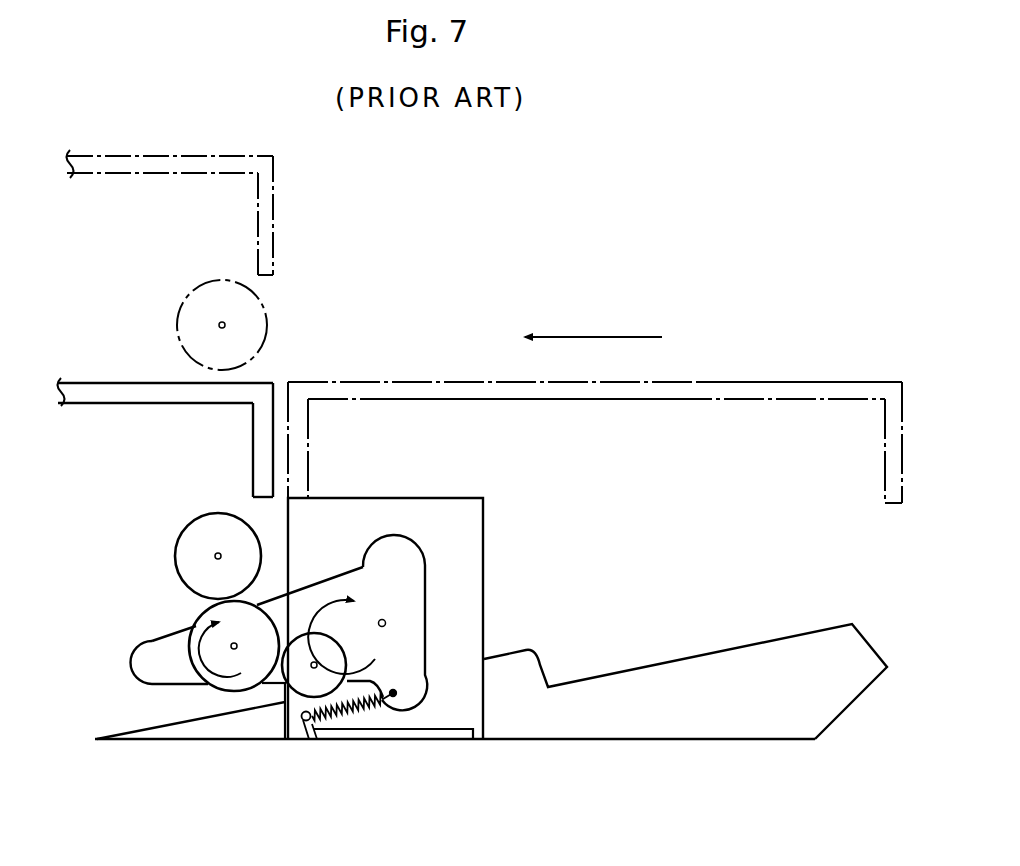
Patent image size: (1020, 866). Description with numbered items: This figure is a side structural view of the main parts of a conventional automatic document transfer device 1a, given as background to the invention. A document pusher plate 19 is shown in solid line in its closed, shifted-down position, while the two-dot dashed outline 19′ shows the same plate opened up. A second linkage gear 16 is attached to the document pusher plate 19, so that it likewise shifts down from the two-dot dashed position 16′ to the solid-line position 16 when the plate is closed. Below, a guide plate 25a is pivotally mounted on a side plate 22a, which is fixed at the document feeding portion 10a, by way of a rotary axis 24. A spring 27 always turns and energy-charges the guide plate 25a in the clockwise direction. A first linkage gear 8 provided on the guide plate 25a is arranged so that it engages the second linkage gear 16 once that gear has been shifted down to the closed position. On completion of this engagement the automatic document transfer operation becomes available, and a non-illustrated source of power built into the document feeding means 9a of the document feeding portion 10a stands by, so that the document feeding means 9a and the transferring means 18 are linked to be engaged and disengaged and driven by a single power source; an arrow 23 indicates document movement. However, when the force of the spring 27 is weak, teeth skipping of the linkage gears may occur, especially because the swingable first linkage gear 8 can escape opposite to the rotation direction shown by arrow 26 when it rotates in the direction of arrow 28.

The automatic document transfer device 1a is at (434, 350).
The sheet feed direction arrow 23 is at (590, 337).
The document feeding portion 10a is at (815, 335).
The document feeding means 9a is at (543, 516).
The document pusher plate 19 is at (137, 383).
The document pusher plate (opened position) 19′ is at (104, 173).
The second linkage gear 16 is at (183, 552).
The second linkage gear (opened position) 16′ is at (193, 285).
The transferring means 18 is at (192, 503).
The arrow (direction of rotation) 26 is at (340, 628).
The arrow (direction of rotation of first linkage gear) 28 is at (192, 672).
The first linkage gear 8 is at (254, 677).
The spring 27 is at (340, 718).
The guide plate 25a is at (418, 678).
The rotary axis 24 is at (385, 627).
The side plate 22a is at (467, 693).